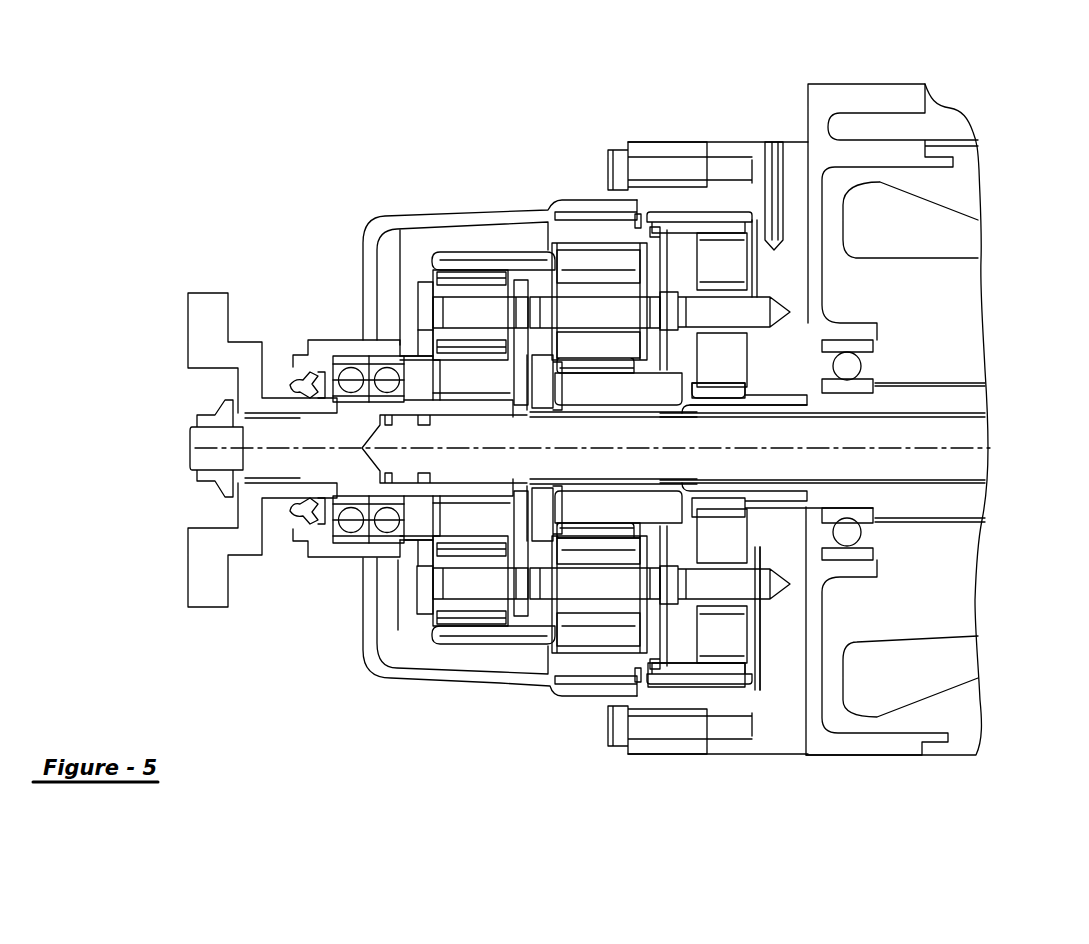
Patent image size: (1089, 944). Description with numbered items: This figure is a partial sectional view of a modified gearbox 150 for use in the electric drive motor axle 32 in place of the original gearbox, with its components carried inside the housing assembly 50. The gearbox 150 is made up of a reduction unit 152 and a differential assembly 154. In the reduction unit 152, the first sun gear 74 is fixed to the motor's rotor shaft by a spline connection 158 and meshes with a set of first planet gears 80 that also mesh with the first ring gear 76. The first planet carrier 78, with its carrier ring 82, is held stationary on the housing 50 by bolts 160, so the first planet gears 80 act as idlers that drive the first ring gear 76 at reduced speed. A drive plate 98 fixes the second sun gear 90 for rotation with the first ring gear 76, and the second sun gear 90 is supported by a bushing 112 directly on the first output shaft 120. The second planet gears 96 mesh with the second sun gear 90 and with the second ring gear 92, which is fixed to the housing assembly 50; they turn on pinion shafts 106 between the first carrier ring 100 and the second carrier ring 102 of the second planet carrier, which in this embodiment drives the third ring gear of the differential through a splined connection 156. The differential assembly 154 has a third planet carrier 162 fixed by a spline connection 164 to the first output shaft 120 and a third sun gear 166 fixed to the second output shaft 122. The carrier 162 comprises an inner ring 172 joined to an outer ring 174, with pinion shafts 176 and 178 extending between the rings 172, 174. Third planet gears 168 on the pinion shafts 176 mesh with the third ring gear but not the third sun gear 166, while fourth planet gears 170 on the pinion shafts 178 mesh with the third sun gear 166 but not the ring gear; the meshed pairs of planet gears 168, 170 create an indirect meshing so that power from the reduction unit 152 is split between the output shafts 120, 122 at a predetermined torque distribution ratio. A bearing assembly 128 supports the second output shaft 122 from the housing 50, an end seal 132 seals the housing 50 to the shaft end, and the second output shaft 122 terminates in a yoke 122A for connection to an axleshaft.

The electric drive motor axle 32 is at (680, 90).
The housing assembly 50 is at (880, 92).
The first sun gear 74 is at (795, 503).
The first ring gear 76 is at (678, 680).
The first planet carrier 78 is at (727, 612).
The first planet gears 80 is at (732, 273).
The carrier ring 82 is at (682, 287).
The second sun gear 90 is at (610, 513).
The second ring gear 92 is at (612, 232).
The second planet gears 96 is at (585, 265).
The drive plate 98 is at (662, 643).
The first carrier ring 100 is at (643, 340).
The second carrier ring 102 is at (542, 402).
The pinion shafts 106 is at (570, 307).
The bushing 112 is at (610, 407).
The first output shaft 120 is at (975, 432).
The second output shaft 122 is at (262, 443).
The yoke 122A is at (205, 592).
The bearing assembly 128 is at (353, 542).
The end seal 132 is at (302, 380).
The modified gearbox 150 is at (412, 648).
The reduction unit 152 is at (623, 688).
The differential assembly 154 is at (413, 262).
The splined connection 156 is at (542, 268).
The spline connection 158 is at (745, 402).
The bolts 160 is at (783, 580).
The third planet carrier 162 is at (427, 597).
The spline connection 164 is at (480, 418).
The third sun gear 166 is at (485, 517).
The third planet gears 168 is at (475, 290).
The fourth planet gears 170 is at (469, 596).
The inner ring 172 is at (520, 295).
The outer ring 174 is at (420, 293).
The pinion shafts 176 is at (462, 316).
The pinion shafts 178 is at (480, 579).